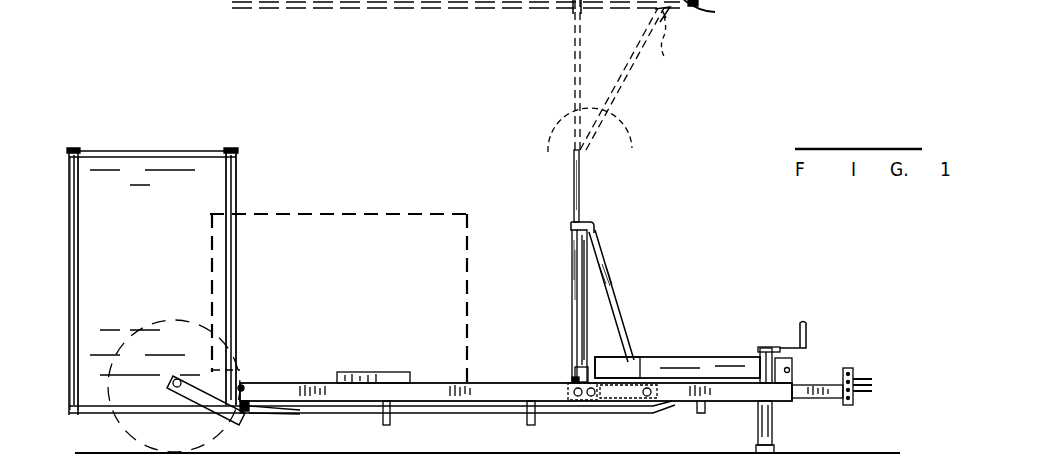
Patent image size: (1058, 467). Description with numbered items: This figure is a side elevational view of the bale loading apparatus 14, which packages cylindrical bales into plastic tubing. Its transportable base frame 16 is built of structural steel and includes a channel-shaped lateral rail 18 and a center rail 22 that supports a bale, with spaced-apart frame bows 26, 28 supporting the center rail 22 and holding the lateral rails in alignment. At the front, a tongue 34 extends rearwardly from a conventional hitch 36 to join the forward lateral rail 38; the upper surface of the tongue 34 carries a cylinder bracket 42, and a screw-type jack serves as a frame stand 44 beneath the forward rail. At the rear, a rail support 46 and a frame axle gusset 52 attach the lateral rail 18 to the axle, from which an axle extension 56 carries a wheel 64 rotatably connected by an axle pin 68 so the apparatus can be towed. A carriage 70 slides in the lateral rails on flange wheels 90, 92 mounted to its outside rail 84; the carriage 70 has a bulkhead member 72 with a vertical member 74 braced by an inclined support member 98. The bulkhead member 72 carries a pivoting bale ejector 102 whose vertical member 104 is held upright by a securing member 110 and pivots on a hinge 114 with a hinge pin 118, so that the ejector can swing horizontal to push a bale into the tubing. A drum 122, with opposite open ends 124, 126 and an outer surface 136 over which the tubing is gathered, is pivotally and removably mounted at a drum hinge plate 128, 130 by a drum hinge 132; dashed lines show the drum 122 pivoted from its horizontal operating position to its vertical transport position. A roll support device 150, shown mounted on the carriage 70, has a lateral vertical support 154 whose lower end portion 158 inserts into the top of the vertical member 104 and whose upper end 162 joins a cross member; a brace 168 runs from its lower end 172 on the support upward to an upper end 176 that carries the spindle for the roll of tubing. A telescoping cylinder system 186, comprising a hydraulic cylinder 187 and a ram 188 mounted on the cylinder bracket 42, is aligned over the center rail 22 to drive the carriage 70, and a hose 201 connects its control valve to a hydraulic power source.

The bale loading apparatus 14 is at (690, 159).
The transportable base frame 16 is at (836, 436).
The lateral rail 18 is at (494, 403).
The center rail 22 is at (360, 416).
The frame bow 26 is at (529, 426).
The frame bow 28 is at (386, 425).
The tongue 34 is at (817, 383).
The hitch 36 is at (855, 373).
The lateral rail 38 is at (750, 403).
The cylinder bracket 42 is at (793, 372).
The frame stand 44 is at (787, 347).
The rail support 46 is at (250, 413).
The frame axle gusset 52 is at (258, 414).
The axle extension 56 is at (226, 422).
The wheel 64 is at (124, 433).
The axle pin 68 is at (178, 379).
The carriage 70 is at (626, 223).
The bulkhead member 72 is at (618, 266).
The vertical member 74 is at (576, 305).
The outside rail 84 is at (610, 402).
The flange wheel 90 is at (672, 426).
The flange wheel 92 is at (573, 403).
The support member 98 is at (612, 302).
The bale ejector 102 is at (588, 180).
The vertical member 104 is at (571, 274).
The securing member 110 is at (572, 226).
The hinge 114 is at (578, 370).
The hinge pin 118 is at (571, 379).
The drum 122 is at (150, 133).
The open end 124 is at (367, 212).
The open end 126 is at (238, 183).
The drum hinge plate 128 is at (237, 362).
The drum hinge plate 130 is at (383, 372).
The drum hinge 132 is at (245, 386).
The outer surface 136 is at (128, 165).
The roll support device 150 is at (472, 10).
The lateral vertical support 154 is at (575, 72).
The lower end portion 158 is at (556, 143).
The upper end 162 is at (572, 12).
The brace 168 is at (624, 86).
The lower end 172 is at (611, 141).
The upper end 176 is at (676, 43).
The telescoping cylinder system 186 is at (690, 354).
The hydraulic cylinder 187 is at (640, 356).
The ram 188 is at (767, 347).
The hose 201 is at (685, 21).